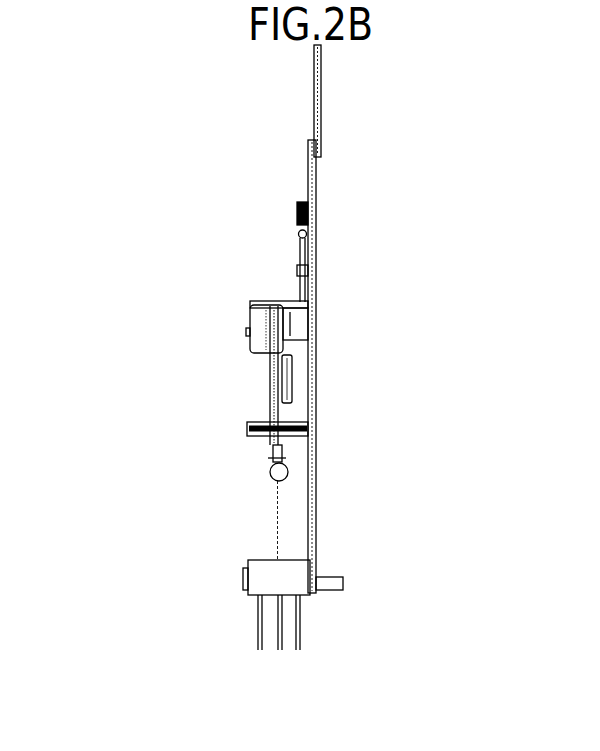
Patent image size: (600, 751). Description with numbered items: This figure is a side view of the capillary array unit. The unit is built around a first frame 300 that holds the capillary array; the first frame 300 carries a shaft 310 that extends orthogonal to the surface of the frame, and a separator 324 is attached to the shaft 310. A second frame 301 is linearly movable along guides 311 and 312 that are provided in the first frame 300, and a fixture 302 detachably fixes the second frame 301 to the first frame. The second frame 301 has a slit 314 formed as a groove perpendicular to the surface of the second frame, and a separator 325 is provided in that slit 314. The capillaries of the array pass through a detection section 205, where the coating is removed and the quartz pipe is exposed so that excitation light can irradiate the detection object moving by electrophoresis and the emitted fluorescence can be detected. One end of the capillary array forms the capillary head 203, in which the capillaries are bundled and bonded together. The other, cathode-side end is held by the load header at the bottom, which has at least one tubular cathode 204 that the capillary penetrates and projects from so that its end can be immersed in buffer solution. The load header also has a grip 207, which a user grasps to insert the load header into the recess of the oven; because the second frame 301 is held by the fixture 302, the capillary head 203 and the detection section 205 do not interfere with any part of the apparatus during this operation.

The first frame 300 is at (336, 173).
The fixture 302 is at (297, 208).
The guide 311 is at (298, 237).
The guide 312 is at (297, 272).
The slit 314 is at (272, 300).
The separator 325 is at (246, 332).
The second frame 301 is at (298, 322).
The detection section 205 is at (292, 372).
The shaft 310 is at (262, 421).
The separator 324 is at (248, 427).
The capillary head 203 is at (270, 458).
The tubular cathode 204 is at (282, 626).
The grip 207 is at (343, 581).